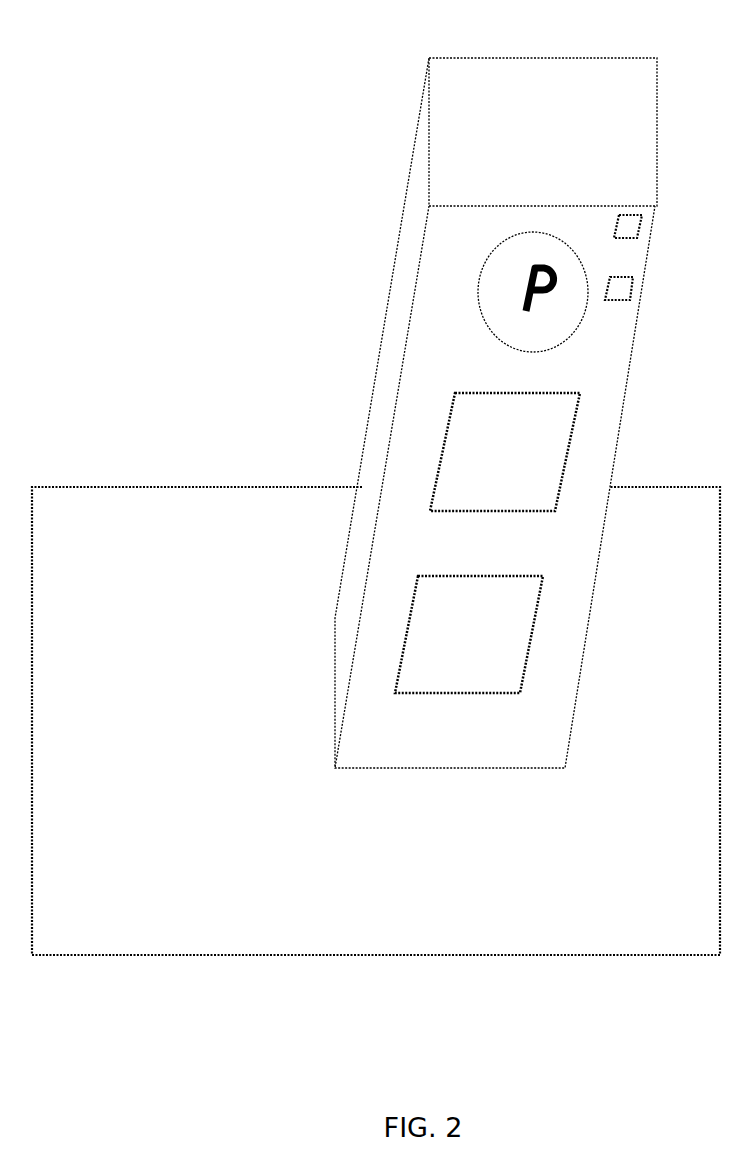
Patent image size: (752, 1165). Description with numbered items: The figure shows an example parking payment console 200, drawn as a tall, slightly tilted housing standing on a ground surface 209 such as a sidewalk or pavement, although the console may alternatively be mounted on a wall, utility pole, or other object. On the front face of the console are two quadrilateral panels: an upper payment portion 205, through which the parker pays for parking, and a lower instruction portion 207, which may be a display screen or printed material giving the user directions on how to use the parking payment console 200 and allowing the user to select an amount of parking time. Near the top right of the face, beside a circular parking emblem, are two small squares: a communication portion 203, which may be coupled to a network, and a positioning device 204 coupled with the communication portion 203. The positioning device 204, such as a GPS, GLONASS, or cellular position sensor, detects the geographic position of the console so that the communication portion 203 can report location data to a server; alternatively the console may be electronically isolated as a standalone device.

The parking payment console 200 is at (302, 31).
The communication portion 203 is at (622, 217).
The positioning device 204 is at (613, 277).
The payment portion 205 is at (478, 393).
The instruction portion 207 is at (438, 577).
The ground surface 209 is at (165, 485).